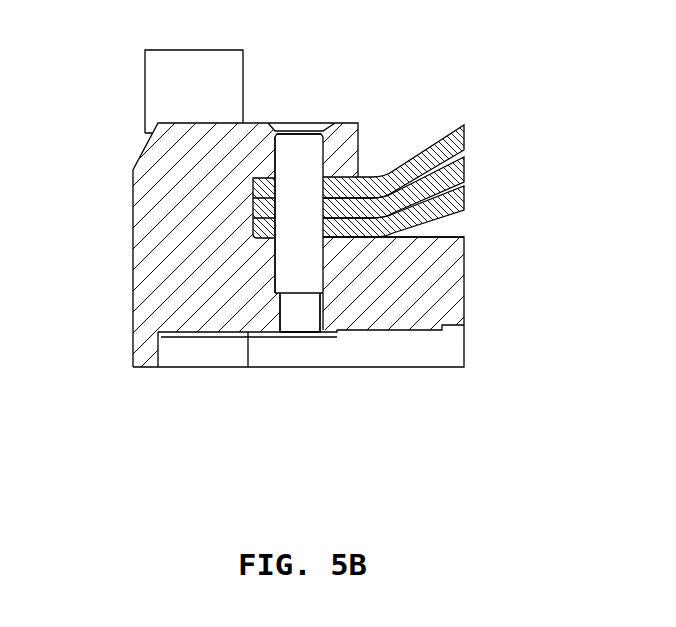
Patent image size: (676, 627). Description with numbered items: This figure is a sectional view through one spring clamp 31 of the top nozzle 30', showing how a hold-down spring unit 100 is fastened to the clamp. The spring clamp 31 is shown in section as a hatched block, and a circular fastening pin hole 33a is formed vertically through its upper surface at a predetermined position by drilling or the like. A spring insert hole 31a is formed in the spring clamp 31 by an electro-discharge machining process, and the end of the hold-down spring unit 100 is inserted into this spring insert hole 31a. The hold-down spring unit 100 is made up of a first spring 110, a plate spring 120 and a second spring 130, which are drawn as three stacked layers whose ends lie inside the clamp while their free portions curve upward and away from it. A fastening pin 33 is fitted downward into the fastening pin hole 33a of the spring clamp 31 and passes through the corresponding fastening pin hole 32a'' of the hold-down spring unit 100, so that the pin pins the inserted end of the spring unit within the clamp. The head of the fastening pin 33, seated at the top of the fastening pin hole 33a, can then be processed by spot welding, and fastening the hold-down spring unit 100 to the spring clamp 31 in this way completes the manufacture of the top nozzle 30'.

The top nozzle 30' is at (329, 234).
The spring clamp 31 is at (147, 192).
The spring insert hole 31a is at (345, 222).
The fastening pin hole 32a'' is at (179, 196).
The fastening pin 33 is at (285, 148).
The fastening pin hole 33a is at (303, 121).
The hold-down spring unit 100 is at (358, 124).
The first spring 110 is at (465, 131).
The plate spring 120 is at (465, 165).
The second spring 130 is at (465, 196).